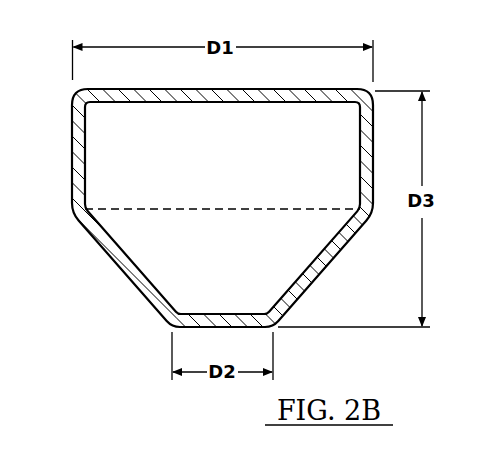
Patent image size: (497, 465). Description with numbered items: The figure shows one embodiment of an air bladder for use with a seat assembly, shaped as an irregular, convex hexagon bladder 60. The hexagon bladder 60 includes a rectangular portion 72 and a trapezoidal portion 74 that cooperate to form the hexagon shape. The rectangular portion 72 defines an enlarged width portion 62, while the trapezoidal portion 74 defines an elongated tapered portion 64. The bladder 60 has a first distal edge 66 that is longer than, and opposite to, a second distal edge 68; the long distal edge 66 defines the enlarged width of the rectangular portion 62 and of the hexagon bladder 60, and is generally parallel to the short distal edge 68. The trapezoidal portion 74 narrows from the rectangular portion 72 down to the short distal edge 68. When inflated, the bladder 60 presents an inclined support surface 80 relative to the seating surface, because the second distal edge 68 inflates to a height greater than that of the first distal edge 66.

The irregular hexagon bladder 60 is at (58, 94).
The enlarged width portion 62 is at (342, 123).
The elongated tapered portion 64 is at (303, 247).
The first distal edge 66 is at (279, 88).
The second distal edge 68 is at (247, 329).
The rectangular portion 72 is at (98, 147).
The trapezoidal portion 74 is at (102, 248).
The inclined support surface 80 is at (342, 167).